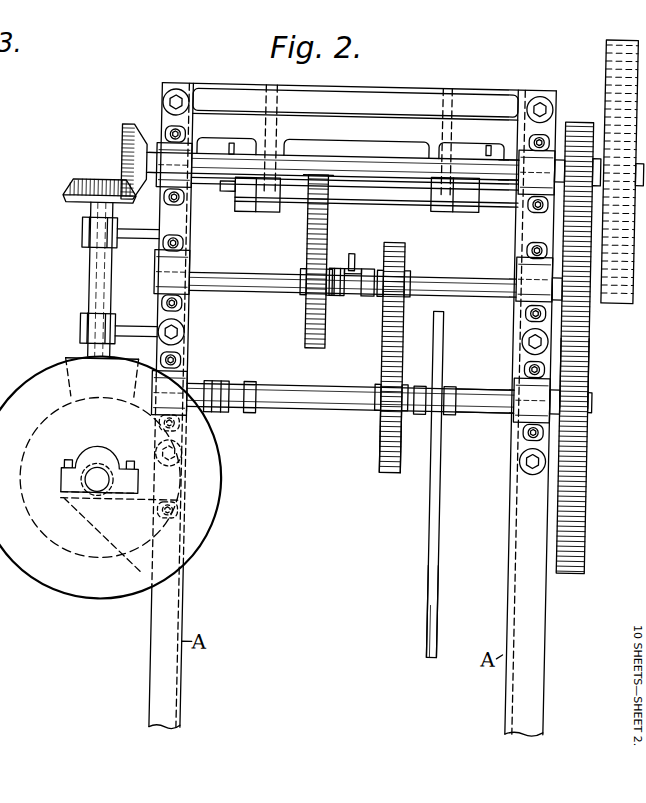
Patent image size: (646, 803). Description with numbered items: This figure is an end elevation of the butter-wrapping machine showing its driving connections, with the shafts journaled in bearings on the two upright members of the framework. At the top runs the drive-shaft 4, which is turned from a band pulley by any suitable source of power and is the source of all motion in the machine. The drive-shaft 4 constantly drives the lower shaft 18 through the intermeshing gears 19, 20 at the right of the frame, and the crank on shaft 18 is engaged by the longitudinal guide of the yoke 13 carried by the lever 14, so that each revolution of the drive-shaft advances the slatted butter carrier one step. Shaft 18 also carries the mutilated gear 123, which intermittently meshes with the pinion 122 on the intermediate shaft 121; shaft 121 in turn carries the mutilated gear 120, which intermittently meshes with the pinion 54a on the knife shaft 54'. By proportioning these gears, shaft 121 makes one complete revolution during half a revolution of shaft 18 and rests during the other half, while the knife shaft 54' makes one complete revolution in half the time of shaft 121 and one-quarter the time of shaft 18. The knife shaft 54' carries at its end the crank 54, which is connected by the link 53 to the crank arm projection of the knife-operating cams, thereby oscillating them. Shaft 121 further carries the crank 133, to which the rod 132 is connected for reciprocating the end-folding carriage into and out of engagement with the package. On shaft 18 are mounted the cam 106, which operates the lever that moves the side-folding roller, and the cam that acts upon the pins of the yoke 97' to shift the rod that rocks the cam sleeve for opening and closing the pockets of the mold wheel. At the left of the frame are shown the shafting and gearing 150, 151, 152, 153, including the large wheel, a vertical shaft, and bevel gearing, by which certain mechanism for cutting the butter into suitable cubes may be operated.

The drive-shaft 4 is at (514, 176).
The yoke 13 is at (449, 445).
The lever 14 is at (449, 574).
The shaft 18 is at (471, 384).
The gear 19 is at (577, 113).
The gear 20 is at (592, 353).
The link 53 is at (231, 159).
The crank 54 is at (349, 207).
The pinion 54a is at (311, 216).
The shaft 54' is at (354, 208).
The yoke 97' is at (218, 386).
The cam 106 is at (257, 380).
The mutilated gear 120 is at (311, 326).
The shaft 121 is at (226, 290).
The pinion 122 is at (409, 250).
The mutilated gear 123 is at (373, 428).
The rod 132 is at (352, 262).
The crank 133 is at (343, 296).
The shafting and gearing 150 is at (98, 468).
The shafting and gearing 151 is at (47, 586).
The shafting and gearing 152 is at (93, 265).
The shafting and gearing 153 is at (126, 162).